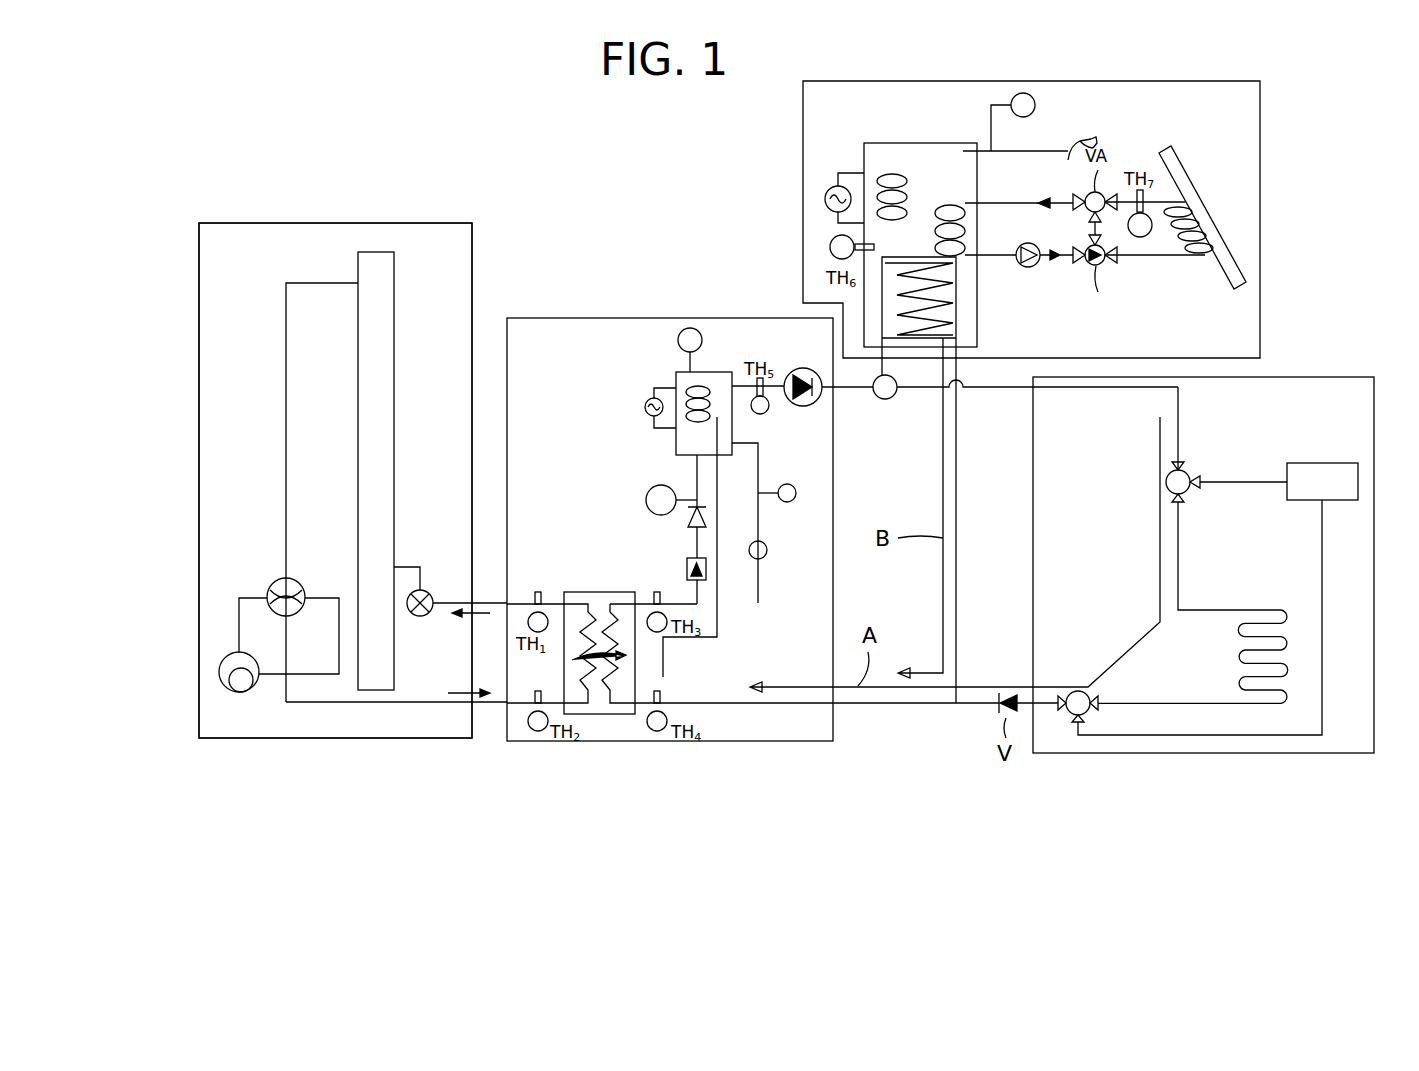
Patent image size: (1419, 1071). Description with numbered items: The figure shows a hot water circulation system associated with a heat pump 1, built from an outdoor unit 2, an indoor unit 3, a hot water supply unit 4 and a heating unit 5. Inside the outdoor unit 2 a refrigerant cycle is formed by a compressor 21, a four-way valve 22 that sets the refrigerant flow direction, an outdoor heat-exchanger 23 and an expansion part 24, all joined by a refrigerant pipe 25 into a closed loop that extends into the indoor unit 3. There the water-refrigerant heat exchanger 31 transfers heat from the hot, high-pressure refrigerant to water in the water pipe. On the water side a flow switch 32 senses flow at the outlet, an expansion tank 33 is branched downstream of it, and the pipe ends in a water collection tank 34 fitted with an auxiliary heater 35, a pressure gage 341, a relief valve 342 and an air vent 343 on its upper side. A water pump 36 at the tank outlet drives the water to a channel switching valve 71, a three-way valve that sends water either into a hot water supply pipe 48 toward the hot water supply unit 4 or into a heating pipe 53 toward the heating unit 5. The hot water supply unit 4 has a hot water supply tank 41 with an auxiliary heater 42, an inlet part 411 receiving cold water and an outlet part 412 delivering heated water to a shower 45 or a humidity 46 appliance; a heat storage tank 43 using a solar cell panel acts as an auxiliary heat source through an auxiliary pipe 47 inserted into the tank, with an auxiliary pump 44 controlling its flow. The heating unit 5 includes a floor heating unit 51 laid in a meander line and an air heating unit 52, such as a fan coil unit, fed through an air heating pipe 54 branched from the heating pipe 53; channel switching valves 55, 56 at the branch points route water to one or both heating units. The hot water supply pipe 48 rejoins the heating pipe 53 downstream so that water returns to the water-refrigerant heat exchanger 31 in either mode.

The hot water circulation system associated with a heat pump 1 is at (462, 126).
The outdoor unit 2 is at (337, 223).
The compressor 21 is at (230, 652).
The four-way valve 22 is at (277, 581).
The outdoor heat-exchanger 23 is at (394, 440).
The expansion part 24 is at (428, 590).
The refrigerant pipe 25 is at (487, 707).
The indoor unit 3 is at (640, 318).
The water-refrigerant heat exchanger 31 is at (598, 592).
The flow switch 32 is at (687, 568).
The expansion tank 33 is at (650, 490).
The water collection tank 34 is at (718, 372).
The pressure gage 341 is at (790, 503).
The relief valve 342 is at (732, 547).
The air vent 343 is at (693, 328).
The auxiliary heater 35 is at (656, 393).
The water pump 36 is at (803, 407).
The hot water supply unit 4 is at (1260, 218).
The hot water supply tank 41 is at (918, 143).
The inlet part 411 is at (963, 337).
The outlet part 412 is at (997, 155).
The auxiliary heater 42 is at (843, 173).
The heat storage tank 43 is at (1195, 190).
The auxiliary pump 44 is at (1030, 268).
The shower 45 is at (1073, 141).
The humidity 46 is at (1011, 101).
The auxiliary pipe 47 is at (1153, 258).
The hot water supply pipe 48 is at (958, 490).
The heating unit 5 is at (1340, 373).
The floor heating unit 51 is at (1253, 610).
The air heating unit 52 is at (1320, 462).
The heating pipe 53 is at (1180, 415).
The air heating pipe 54 is at (1253, 480).
The channel switching valve 55 is at (1186, 466).
The channel switching valve 56 is at (1100, 700).
The channel switching valve 71 is at (883, 400).